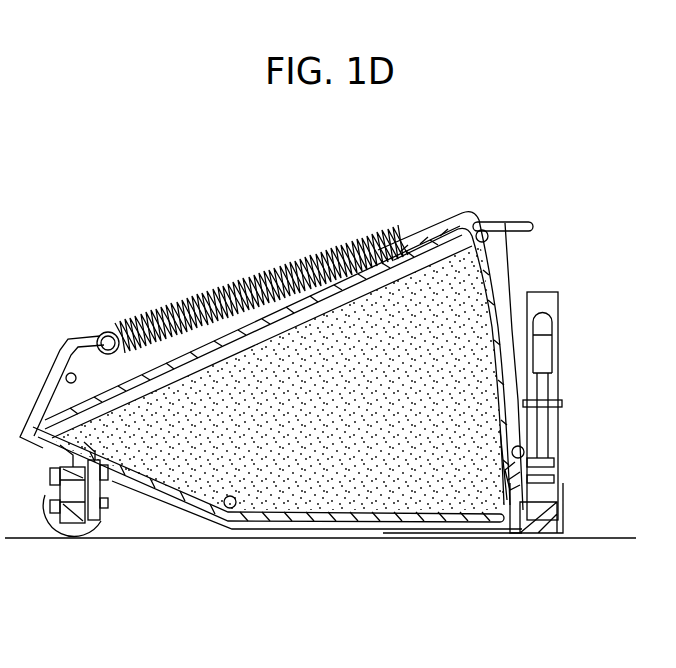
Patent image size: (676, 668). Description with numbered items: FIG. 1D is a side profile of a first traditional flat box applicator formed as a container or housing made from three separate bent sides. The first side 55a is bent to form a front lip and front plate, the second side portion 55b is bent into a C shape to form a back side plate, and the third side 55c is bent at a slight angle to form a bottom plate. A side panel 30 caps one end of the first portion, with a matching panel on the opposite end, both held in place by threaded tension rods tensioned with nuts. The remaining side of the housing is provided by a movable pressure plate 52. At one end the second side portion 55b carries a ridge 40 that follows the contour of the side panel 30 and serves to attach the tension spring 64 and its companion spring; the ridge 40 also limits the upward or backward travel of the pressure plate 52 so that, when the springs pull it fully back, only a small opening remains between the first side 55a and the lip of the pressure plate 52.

The side panel 30 is at (433, 227).
The ridge 40 is at (93, 340).
The pressure plate 52 is at (205, 363).
The first side 55a is at (521, 215).
The second side portion 55b is at (92, 337).
The third side 55c is at (342, 523).
The tension spring 64 is at (262, 270).